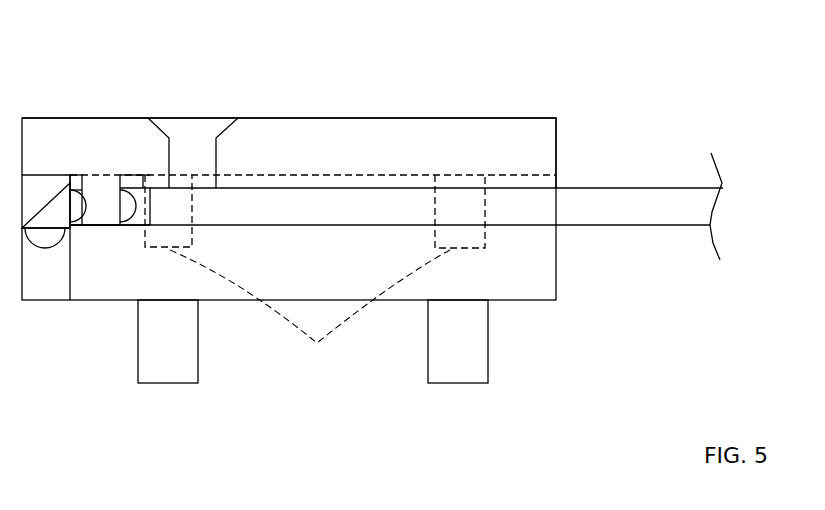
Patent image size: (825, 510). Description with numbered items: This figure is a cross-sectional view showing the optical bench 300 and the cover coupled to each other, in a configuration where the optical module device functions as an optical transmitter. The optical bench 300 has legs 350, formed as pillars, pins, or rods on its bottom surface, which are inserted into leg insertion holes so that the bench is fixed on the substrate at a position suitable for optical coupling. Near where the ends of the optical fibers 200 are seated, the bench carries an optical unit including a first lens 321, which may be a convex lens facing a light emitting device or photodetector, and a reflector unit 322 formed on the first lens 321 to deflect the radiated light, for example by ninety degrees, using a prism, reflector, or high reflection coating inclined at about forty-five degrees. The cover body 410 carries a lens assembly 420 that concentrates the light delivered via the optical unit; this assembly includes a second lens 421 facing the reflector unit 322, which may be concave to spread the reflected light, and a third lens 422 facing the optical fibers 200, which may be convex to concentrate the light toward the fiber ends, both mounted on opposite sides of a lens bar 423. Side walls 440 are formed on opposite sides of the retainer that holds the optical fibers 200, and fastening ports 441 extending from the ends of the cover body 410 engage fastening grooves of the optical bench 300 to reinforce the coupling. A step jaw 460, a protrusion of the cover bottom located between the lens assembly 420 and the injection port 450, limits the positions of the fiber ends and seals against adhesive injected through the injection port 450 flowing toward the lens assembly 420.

The optical fibers 200 is at (665, 188).
The optical bench 300 is at (535, 300).
The legs 350 is at (177, 367).
The cover body 410 is at (443, 118).
The side walls 440 is at (333, 197).
The fastening ports 441 is at (310, 310).
The injection port 450 is at (194, 143).
The step jaw 460 is at (123, 200).
The lens assembly 420 is at (90, 230).
The second lens 421 is at (67, 232).
The third lens 422 is at (133, 227).
The lens bar 423 is at (100, 197).
The first lens 321 is at (27, 250).
The reflector unit 322 is at (48, 200).